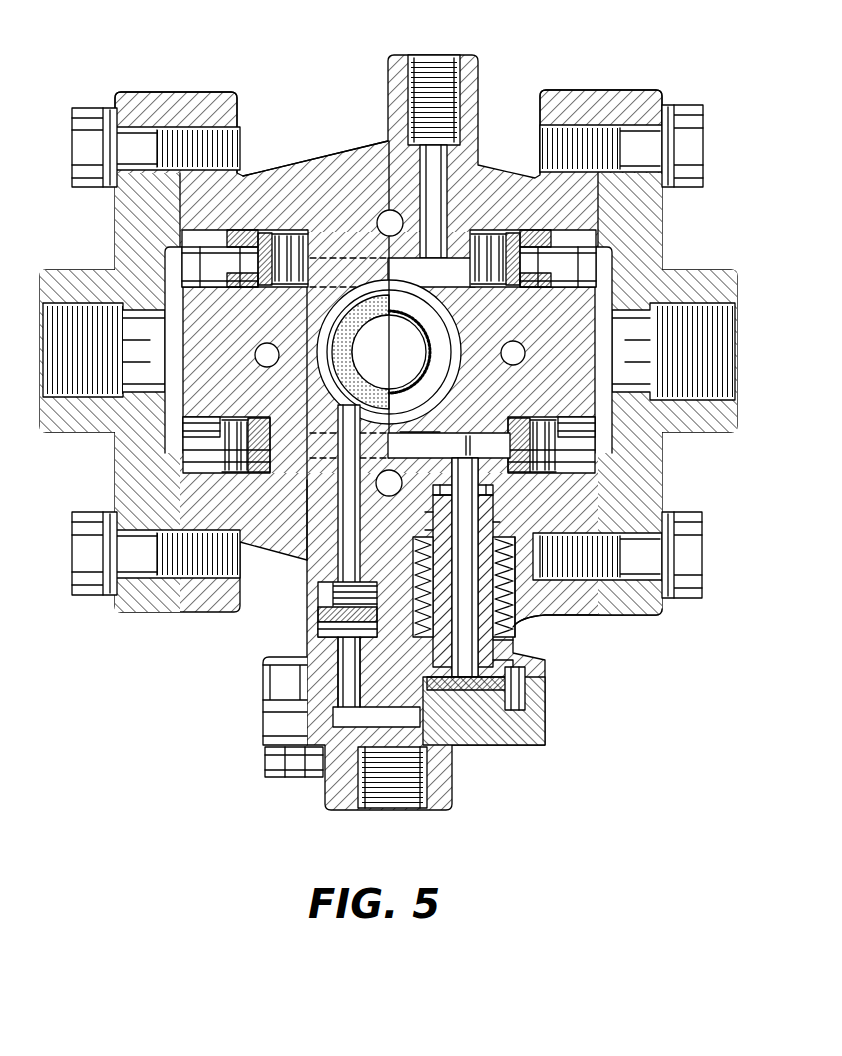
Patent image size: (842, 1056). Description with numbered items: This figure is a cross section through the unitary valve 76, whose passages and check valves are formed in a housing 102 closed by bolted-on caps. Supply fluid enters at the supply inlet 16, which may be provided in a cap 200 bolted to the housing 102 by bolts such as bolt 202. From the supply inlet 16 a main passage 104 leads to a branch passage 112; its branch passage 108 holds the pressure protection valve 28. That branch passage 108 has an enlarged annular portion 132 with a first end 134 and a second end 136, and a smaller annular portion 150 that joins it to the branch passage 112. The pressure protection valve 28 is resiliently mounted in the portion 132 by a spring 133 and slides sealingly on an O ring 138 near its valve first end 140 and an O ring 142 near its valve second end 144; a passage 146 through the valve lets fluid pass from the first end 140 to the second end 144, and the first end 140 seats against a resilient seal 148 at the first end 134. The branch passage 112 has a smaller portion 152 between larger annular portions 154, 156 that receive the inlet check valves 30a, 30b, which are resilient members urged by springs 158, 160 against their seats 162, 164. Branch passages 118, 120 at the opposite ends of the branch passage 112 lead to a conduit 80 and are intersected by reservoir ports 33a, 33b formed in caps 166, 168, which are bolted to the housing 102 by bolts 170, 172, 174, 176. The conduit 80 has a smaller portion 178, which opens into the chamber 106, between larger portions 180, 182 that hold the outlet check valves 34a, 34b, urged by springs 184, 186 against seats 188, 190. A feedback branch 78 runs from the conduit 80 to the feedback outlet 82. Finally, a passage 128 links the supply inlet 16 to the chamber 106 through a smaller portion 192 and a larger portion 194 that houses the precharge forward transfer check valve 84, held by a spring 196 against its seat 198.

The supply inlet 16 is at (428, 806).
The pressure protection valve 28 is at (516, 630).
The inlet check valve 30a is at (250, 418).
The inlet check valve 30b is at (516, 418).
The reservoir port 33a is at (84, 398).
The reservoir port 33b is at (705, 400).
The outlet check valve 34a is at (250, 231).
The outlet check valve 34b is at (516, 232).
The valve 76 is at (567, 80).
The feedback branch 78 is at (420, 202).
The conduit 80 is at (455, 285).
The feedback outlet 82 is at (450, 60).
The precharge forward transfer check valve 84 is at (318, 613).
The housing 102 is at (366, 140).
The main passage 104 is at (494, 498).
The chamber 106 is at (450, 328).
The branch passage 108 is at (520, 598).
The branch passage 112 is at (420, 432).
The branch passage 118 is at (172, 273).
The branch passage 120 is at (606, 277).
The passage 128 is at (307, 502).
The enlarged annular portion 132 is at (515, 640).
The spring 133 is at (414, 560).
The first end 134 is at (528, 710).
The second end 136 is at (432, 500).
The O ring 138 is at (512, 662).
The valve first end 140 is at (525, 690).
The O ring 142 is at (500, 522).
The valve second end 144 is at (425, 512).
The passage 146 is at (425, 531).
The resilient seal 148 is at (462, 691).
The smaller annular portion 150 is at (462, 446).
The smaller portion 152 is at (488, 446).
The larger annular portion 154 is at (205, 474).
The larger annular portion 156 is at (566, 476).
The spring 158 is at (210, 418).
The spring 160 is at (568, 420).
The seat 162 is at (285, 414).
The seat 164 is at (478, 432).
The cap 166 is at (120, 228).
The cap 168 is at (650, 222).
The bolt 170 is at (90, 118).
The bolt 172 is at (86, 596).
The bolt 174 is at (690, 118).
The bolt 176 is at (628, 569).
The smaller portion 178 is at (318, 265).
The larger portion 180 is at (206, 240).
The larger portion 182 is at (572, 240).
The spring 184 is at (291, 236).
The spring 186 is at (480, 238).
The seat 188 is at (238, 288).
The seat 190 is at (532, 288).
The smaller portion 192 is at (307, 521).
The larger portion 194 is at (280, 690).
The spring 196 is at (318, 589).
The seat 198 is at (318, 630).
The cap 200 is at (538, 746).
The bolt 202 is at (290, 778).